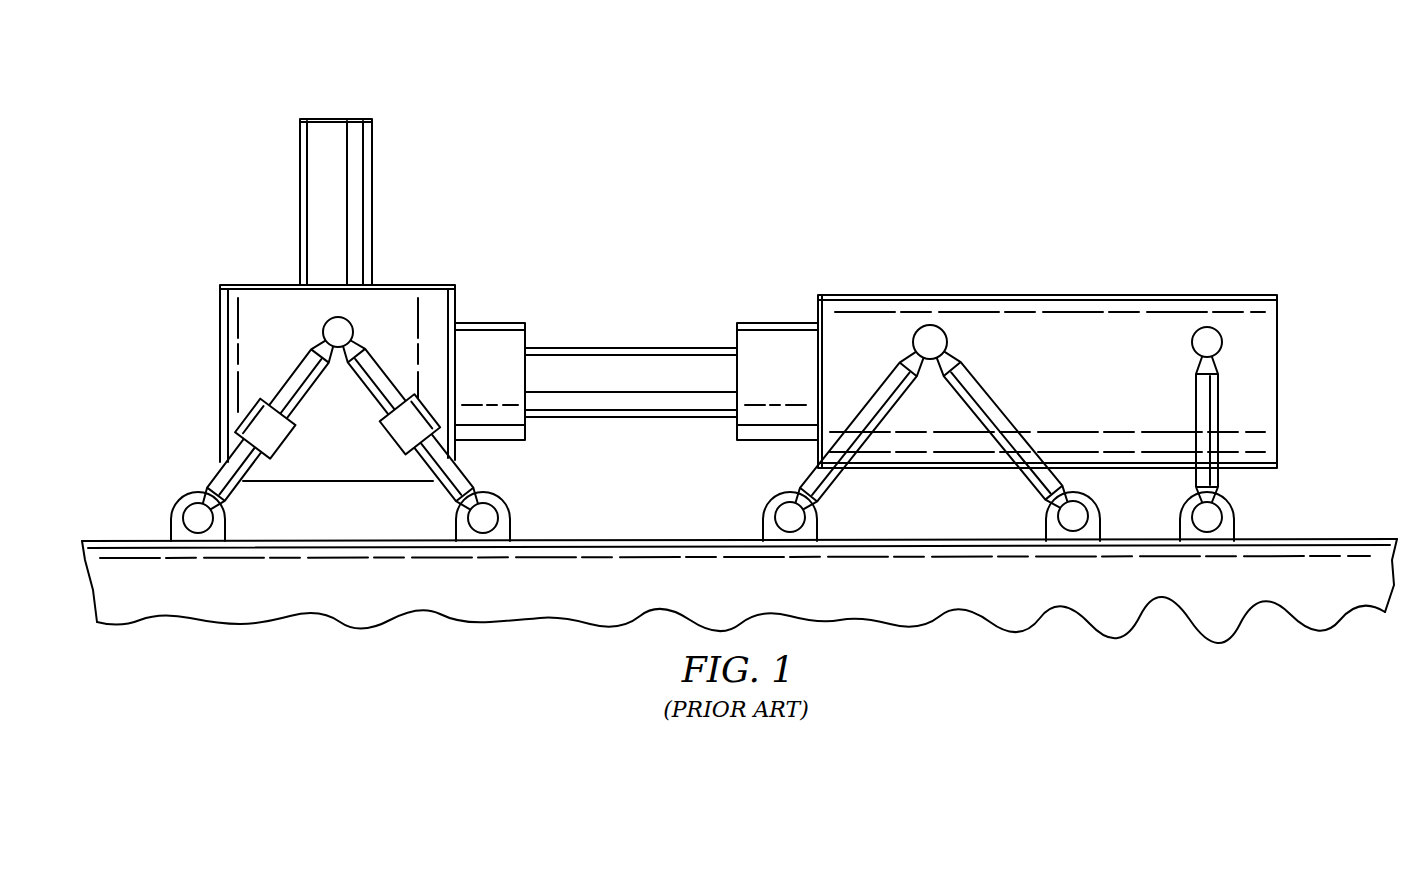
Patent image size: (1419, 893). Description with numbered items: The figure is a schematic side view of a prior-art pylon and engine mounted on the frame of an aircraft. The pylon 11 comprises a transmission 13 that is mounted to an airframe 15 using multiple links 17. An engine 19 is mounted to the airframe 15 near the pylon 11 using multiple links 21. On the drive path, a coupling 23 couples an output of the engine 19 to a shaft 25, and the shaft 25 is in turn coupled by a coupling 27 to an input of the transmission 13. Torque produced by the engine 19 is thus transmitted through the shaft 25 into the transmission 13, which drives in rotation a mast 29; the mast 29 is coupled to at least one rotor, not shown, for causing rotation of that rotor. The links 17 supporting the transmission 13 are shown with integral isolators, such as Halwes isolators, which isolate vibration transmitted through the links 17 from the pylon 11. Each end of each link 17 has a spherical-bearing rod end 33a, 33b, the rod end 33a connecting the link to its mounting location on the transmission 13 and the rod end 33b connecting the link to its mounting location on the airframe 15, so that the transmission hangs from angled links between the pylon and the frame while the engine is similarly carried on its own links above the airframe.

The pylon 11 is at (261, 118).
The transmission 13 is at (220, 382).
The airframe 15 is at (753, 602).
The links 17 is at (340, 430).
The engine 19 is at (1047, 294).
The links 21 is at (872, 395).
The coupling 23 is at (778, 322).
The shaft 25 is at (630, 347).
The coupling 27 is at (490, 322).
The mast 29 is at (300, 200).
The spherical-bearing rod end 33a is at (323, 330).
The spherical-bearing rod end 33b is at (508, 515).